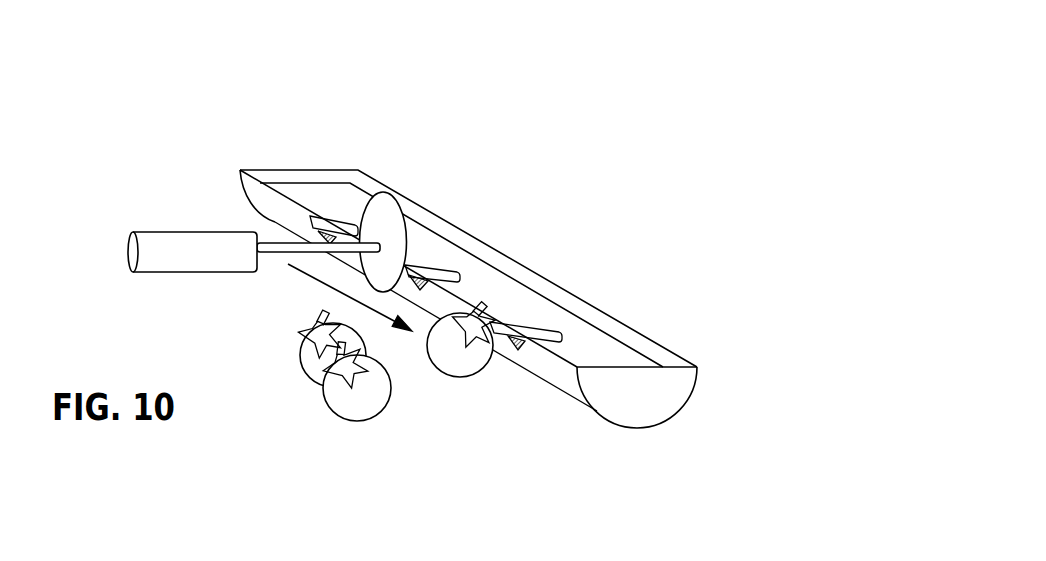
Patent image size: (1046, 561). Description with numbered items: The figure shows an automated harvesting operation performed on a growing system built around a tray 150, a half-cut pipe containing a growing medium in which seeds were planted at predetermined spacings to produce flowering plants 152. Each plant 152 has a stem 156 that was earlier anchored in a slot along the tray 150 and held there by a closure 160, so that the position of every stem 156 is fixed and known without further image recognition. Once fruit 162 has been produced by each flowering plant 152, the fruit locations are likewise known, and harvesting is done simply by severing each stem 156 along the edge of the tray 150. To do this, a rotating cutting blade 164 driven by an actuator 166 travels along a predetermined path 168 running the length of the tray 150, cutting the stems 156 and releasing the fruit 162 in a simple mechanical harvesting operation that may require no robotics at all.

The tray 150 is at (697, 367).
The flowering plant 152 is at (445, 368).
The stem 156 is at (357, 236).
The closure 160 is at (317, 216).
The fruit 162 is at (327, 390).
The rotating cutting blade 164 is at (405, 262).
The actuator 166 is at (128, 258).
The predetermined path 168 is at (288, 264).